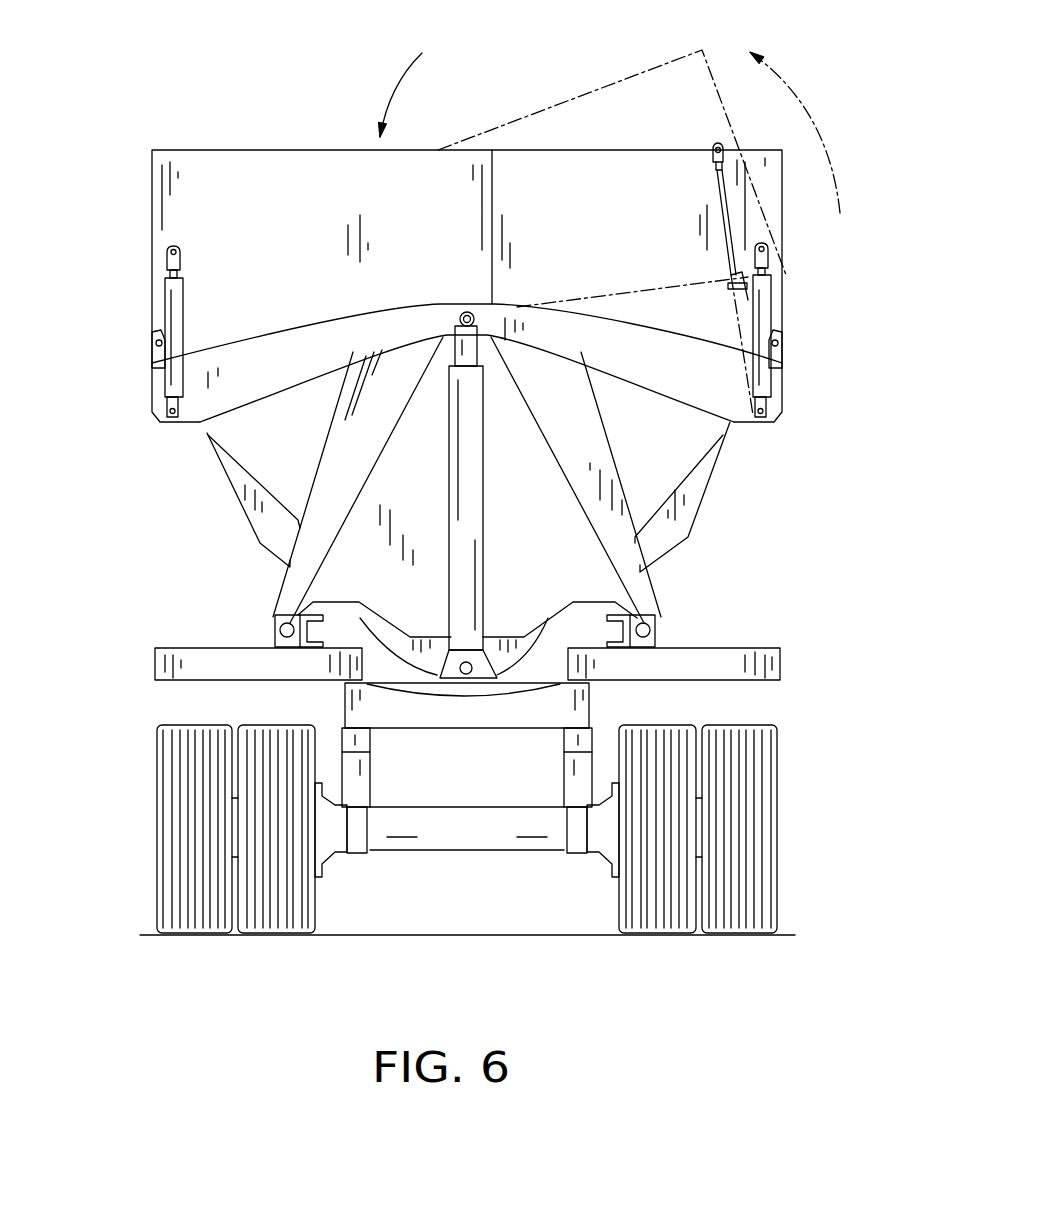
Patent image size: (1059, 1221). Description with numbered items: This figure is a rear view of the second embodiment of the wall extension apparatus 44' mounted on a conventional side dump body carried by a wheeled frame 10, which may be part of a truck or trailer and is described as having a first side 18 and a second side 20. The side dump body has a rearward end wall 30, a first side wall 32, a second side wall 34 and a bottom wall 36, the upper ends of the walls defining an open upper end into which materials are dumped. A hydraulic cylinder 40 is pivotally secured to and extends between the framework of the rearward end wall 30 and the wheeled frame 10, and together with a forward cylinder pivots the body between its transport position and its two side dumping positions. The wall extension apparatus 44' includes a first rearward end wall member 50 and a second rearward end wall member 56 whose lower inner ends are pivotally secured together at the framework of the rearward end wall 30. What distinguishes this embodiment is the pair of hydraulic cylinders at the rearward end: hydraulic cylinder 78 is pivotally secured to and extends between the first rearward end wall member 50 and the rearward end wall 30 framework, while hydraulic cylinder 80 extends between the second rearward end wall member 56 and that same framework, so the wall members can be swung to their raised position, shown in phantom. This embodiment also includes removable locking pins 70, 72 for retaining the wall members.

The wheeled frame 10 is at (783, 713).
The first side 18 is at (173, 600).
The second side 20 is at (760, 567).
The rearward end wall 30 is at (422, 511).
The first side wall 32 is at (257, 487).
The second side wall 34 is at (688, 492).
The bottom wall 36 is at (493, 635).
The hydraulic cylinder 40 is at (472, 484).
The wall extension apparatus 44' is at (610, 216).
The first rearward end wall member 50 is at (290, 236).
The second rearward end wall member 56 is at (612, 226).
The removable locking pin 70 is at (153, 348).
The removable locking pin 72 is at (780, 347).
The hydraulic cylinder 78 is at (176, 312).
The hydraulic cylinder 80 is at (763, 307).